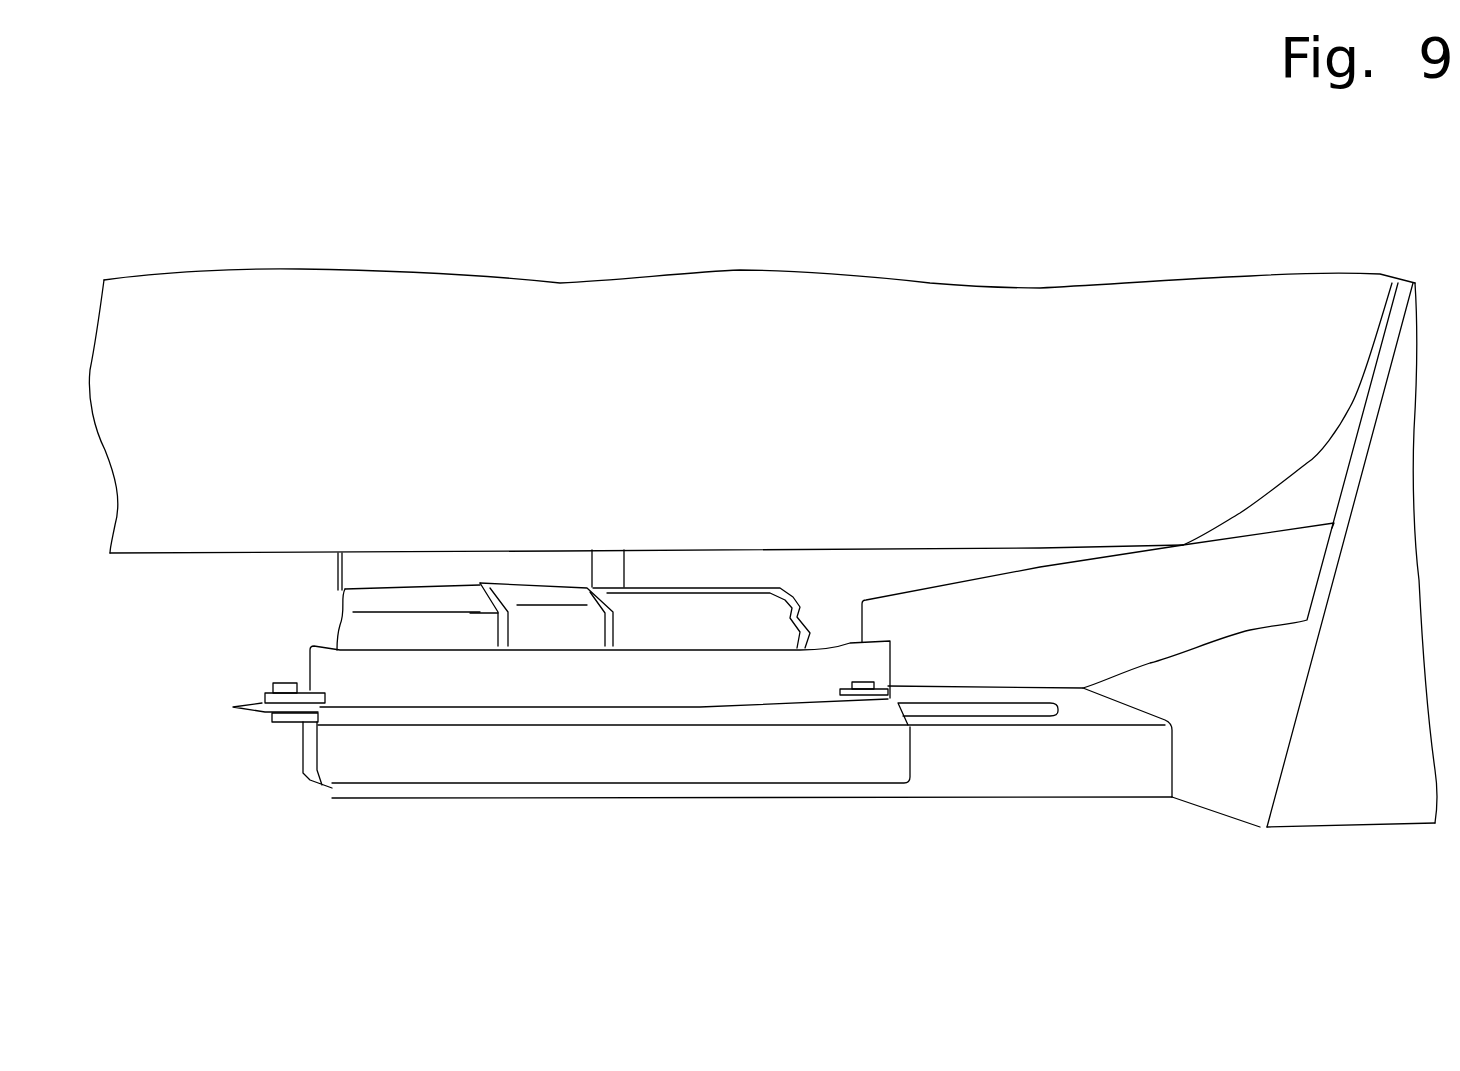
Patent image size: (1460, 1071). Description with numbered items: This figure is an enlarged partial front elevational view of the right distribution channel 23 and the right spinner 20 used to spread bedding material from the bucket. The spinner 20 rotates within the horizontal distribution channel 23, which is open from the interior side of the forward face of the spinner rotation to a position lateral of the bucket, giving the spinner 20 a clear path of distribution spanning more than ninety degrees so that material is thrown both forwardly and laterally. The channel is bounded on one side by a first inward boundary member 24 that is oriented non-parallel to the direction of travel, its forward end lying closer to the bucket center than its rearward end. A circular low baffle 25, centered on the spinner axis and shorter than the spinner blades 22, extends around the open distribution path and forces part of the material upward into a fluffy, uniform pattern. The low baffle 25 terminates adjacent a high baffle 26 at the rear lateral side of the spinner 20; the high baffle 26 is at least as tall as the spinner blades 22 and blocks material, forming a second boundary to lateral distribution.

The spinner 20 is at (232, 668).
The spinner blades 22 is at (520, 638).
The distribution channel 23 is at (1002, 820).
The first inward boundary member 24 is at (1213, 598).
The low baffle 25 is at (482, 695).
The high baffle 26 is at (382, 602).